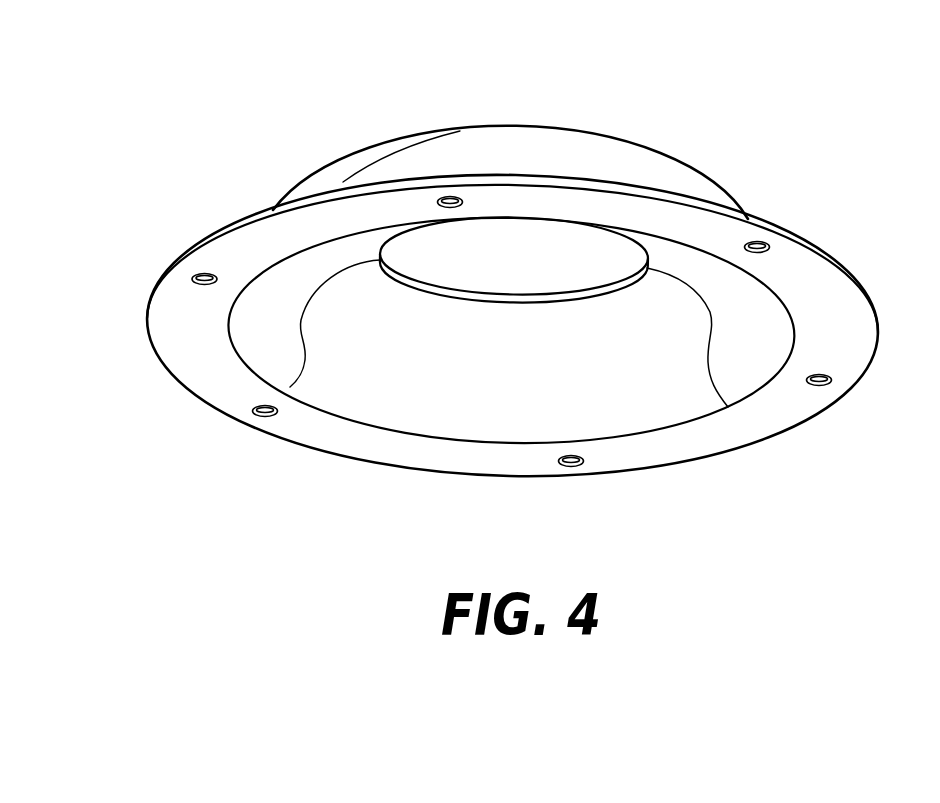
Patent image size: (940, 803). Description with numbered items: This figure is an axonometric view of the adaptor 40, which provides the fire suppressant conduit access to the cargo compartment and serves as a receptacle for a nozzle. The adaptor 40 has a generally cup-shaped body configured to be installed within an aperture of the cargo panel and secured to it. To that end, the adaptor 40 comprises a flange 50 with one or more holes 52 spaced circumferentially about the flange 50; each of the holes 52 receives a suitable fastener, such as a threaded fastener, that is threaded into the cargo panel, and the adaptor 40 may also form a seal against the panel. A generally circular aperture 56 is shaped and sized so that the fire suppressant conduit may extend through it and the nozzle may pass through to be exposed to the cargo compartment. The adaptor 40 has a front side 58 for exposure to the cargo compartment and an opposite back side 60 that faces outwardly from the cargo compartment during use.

The adaptor 40 is at (504, 275).
The flange 50 is at (830, 294).
The holes 52 is at (192, 277).
The aperture 56 is at (545, 242).
The front side 58 is at (783, 486).
The back side 60 is at (806, 157).